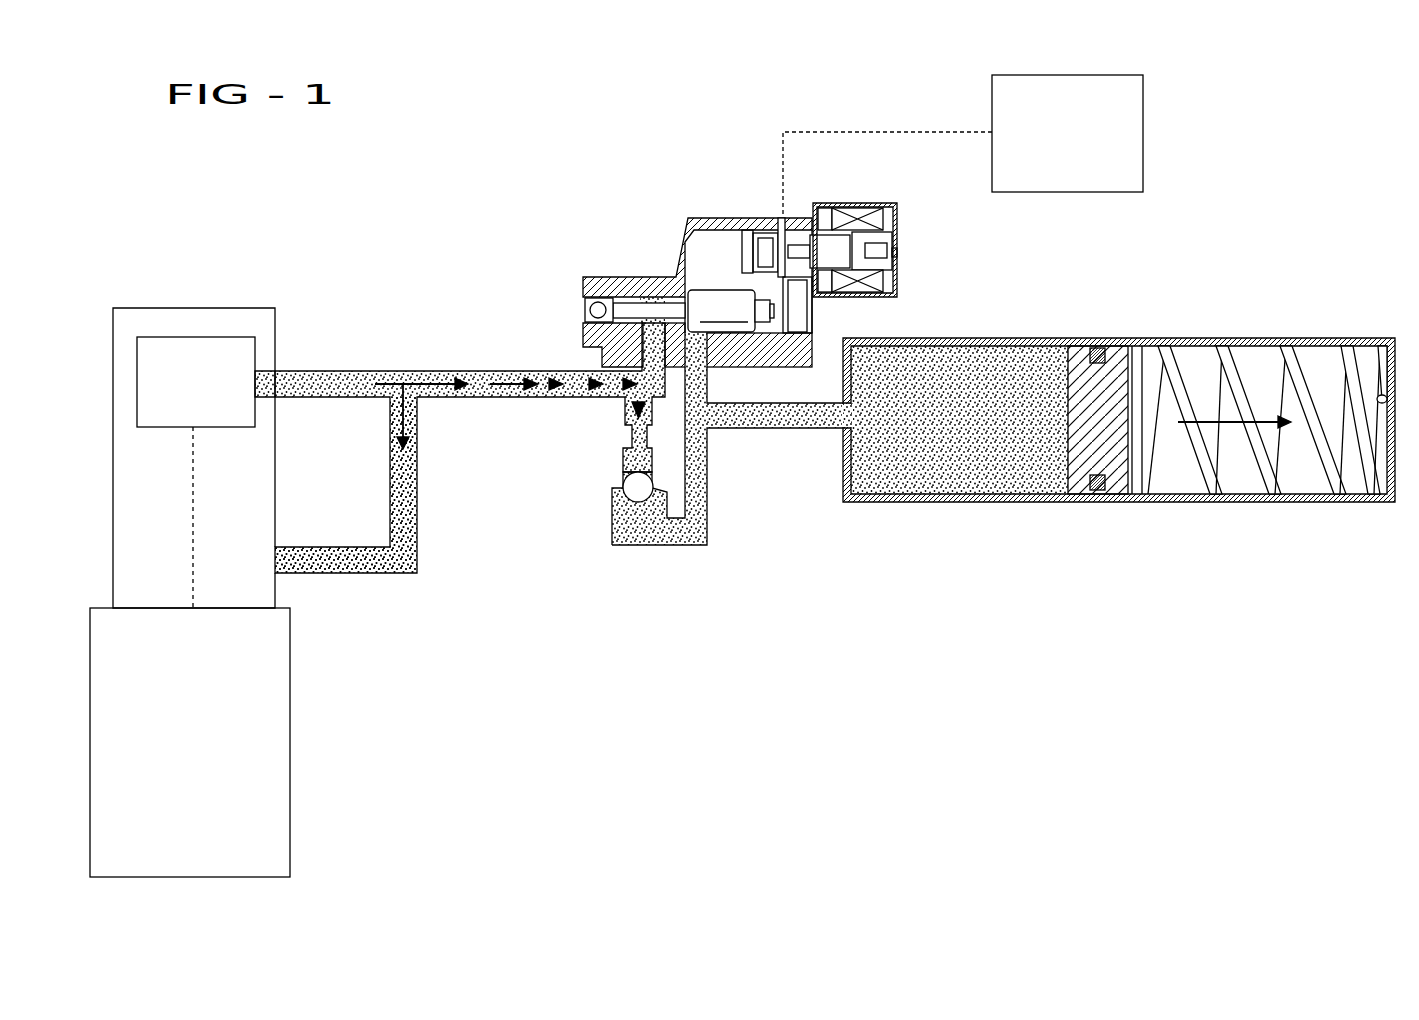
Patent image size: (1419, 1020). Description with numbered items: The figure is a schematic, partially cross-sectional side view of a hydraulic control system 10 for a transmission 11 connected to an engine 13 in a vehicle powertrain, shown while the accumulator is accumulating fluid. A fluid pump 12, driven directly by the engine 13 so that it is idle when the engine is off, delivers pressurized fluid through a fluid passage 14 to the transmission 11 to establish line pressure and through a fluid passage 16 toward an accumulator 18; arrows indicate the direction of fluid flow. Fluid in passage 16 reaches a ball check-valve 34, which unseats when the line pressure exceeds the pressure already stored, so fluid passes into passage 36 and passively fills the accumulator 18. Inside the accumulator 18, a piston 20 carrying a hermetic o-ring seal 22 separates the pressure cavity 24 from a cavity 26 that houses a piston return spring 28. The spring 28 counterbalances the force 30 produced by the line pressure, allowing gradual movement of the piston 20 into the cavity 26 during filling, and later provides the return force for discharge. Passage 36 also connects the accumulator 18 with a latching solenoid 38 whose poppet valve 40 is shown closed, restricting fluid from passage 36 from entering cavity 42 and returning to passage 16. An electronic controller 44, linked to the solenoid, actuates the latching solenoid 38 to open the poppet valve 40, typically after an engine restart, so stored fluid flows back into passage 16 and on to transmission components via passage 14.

The hydraulic control system 10 is at (566, 682).
The transmission 11 is at (275, 500).
The fluid pump 12 is at (208, 336).
The engine 13 is at (290, 707).
The fluid passage 14 is at (410, 537).
The fluid passage 16 is at (420, 371).
The accumulator 18 is at (1107, 322).
The piston 20 is at (1080, 408).
The o-ring seal 22 is at (1097, 363).
The pressure cavity 24 is at (907, 480).
The cavity 26 is at (1308, 485).
The piston return spring 28 is at (1300, 360).
The force 30 is at (1233, 432).
The ball check-valve 34 is at (636, 489).
The passage 36 is at (710, 517).
The latching solenoid 38 is at (694, 182).
The poppet valve 40 is at (628, 298).
The cavity 42 is at (652, 290).
The electronic controller 44 is at (1143, 127).